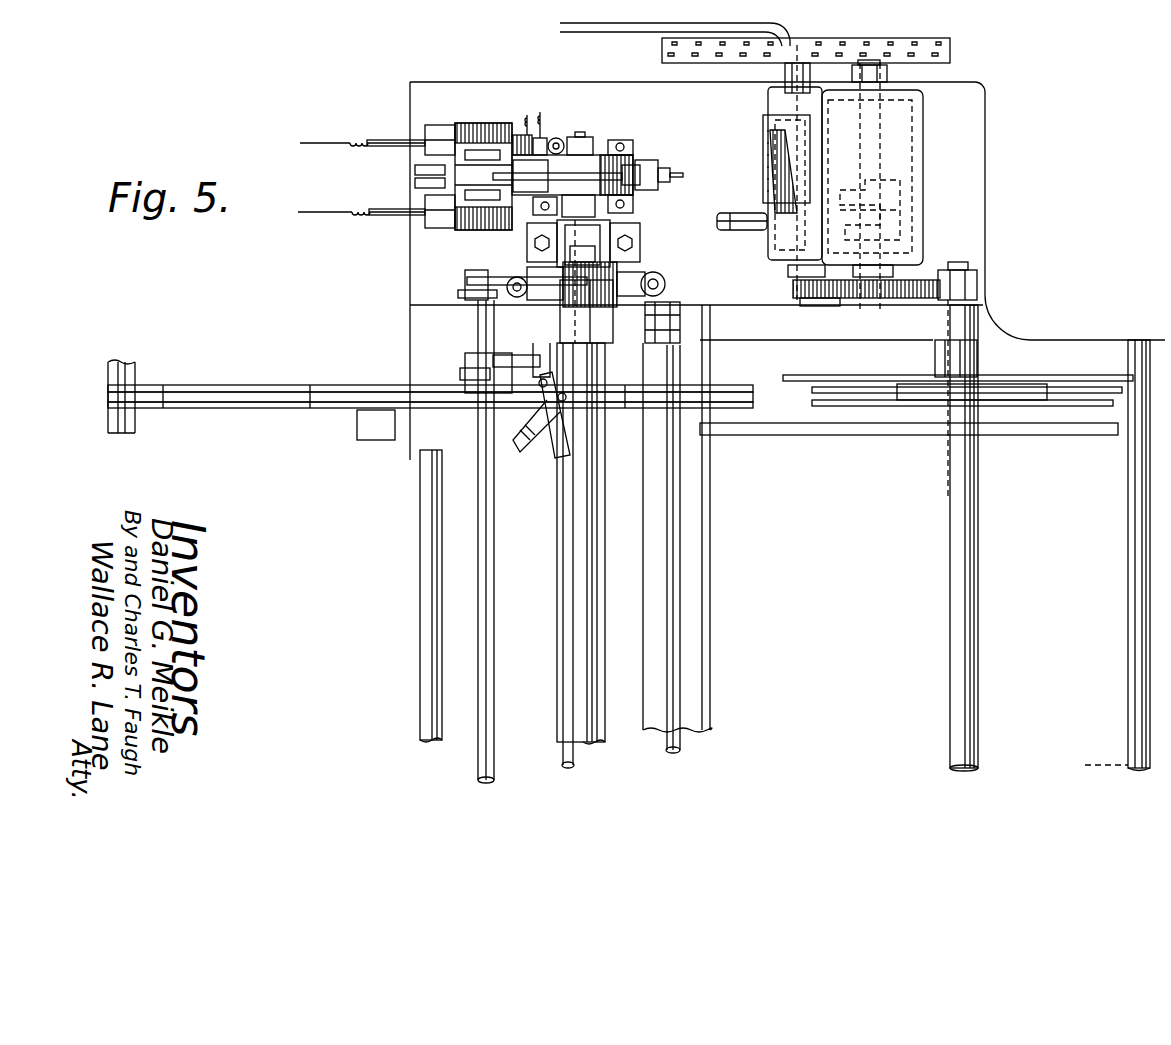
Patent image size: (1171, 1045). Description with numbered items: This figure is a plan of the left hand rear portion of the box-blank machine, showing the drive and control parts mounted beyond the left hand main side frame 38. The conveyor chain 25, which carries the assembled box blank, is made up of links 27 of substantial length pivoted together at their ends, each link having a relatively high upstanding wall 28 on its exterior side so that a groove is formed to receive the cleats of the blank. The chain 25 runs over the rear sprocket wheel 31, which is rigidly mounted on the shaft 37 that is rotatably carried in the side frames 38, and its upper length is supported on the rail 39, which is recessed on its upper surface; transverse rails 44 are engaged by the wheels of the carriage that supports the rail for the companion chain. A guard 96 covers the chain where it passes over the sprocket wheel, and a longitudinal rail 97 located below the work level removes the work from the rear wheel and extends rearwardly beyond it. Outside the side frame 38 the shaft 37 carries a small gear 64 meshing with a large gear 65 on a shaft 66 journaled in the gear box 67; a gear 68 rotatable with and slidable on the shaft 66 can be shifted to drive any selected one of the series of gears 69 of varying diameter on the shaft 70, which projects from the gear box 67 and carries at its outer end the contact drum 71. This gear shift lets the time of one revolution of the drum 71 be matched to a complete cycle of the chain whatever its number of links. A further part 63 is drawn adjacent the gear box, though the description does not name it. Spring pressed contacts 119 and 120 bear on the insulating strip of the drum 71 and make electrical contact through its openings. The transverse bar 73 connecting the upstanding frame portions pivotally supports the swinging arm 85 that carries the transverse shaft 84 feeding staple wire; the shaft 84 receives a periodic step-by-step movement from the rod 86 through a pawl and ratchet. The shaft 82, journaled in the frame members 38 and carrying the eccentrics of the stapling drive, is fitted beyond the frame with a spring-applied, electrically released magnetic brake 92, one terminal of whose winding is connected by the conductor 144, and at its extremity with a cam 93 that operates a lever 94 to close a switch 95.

The conveyor chain 25 is at (212, 387).
The link 27 is at (272, 403).
The high upstanding wall 28 is at (312, 387).
The rear sprocket wheel 31 is at (1090, 400).
The shaft 37 is at (960, 606).
The main side frame 38 is at (710, 312).
The rail 39 is at (322, 408).
The transverse rail 44 is at (430, 605).
The housing 63 is at (768, 152).
The small gear 64 is at (975, 287).
The large gear 65 is at (920, 278).
The shaft 66 is at (873, 165).
The gear box 67 is at (917, 115).
The gear 68 is at (897, 218).
The gears of varying diameter 69 is at (778, 192).
The shaft 70 is at (793, 70).
The contact drum 71 is at (958, 47).
The transverse bar 73 is at (588, 540).
The shaft 82 is at (582, 206).
The transverse shaft 84 is at (486, 510).
The swinging arm 85 is at (500, 282).
The rod 86 is at (505, 360).
The magnetic brake 92 is at (597, 160).
The cam 93 is at (572, 140).
The lever 94 is at (563, 138).
The switch 95 is at (528, 135).
The guard 96 is at (1070, 378).
The longitudinal rail 97 is at (888, 432).
The spring pressed contact point 119 is at (800, 57).
The spring pressed contact 120 is at (802, 44).
The conductor 144 is at (336, 210).